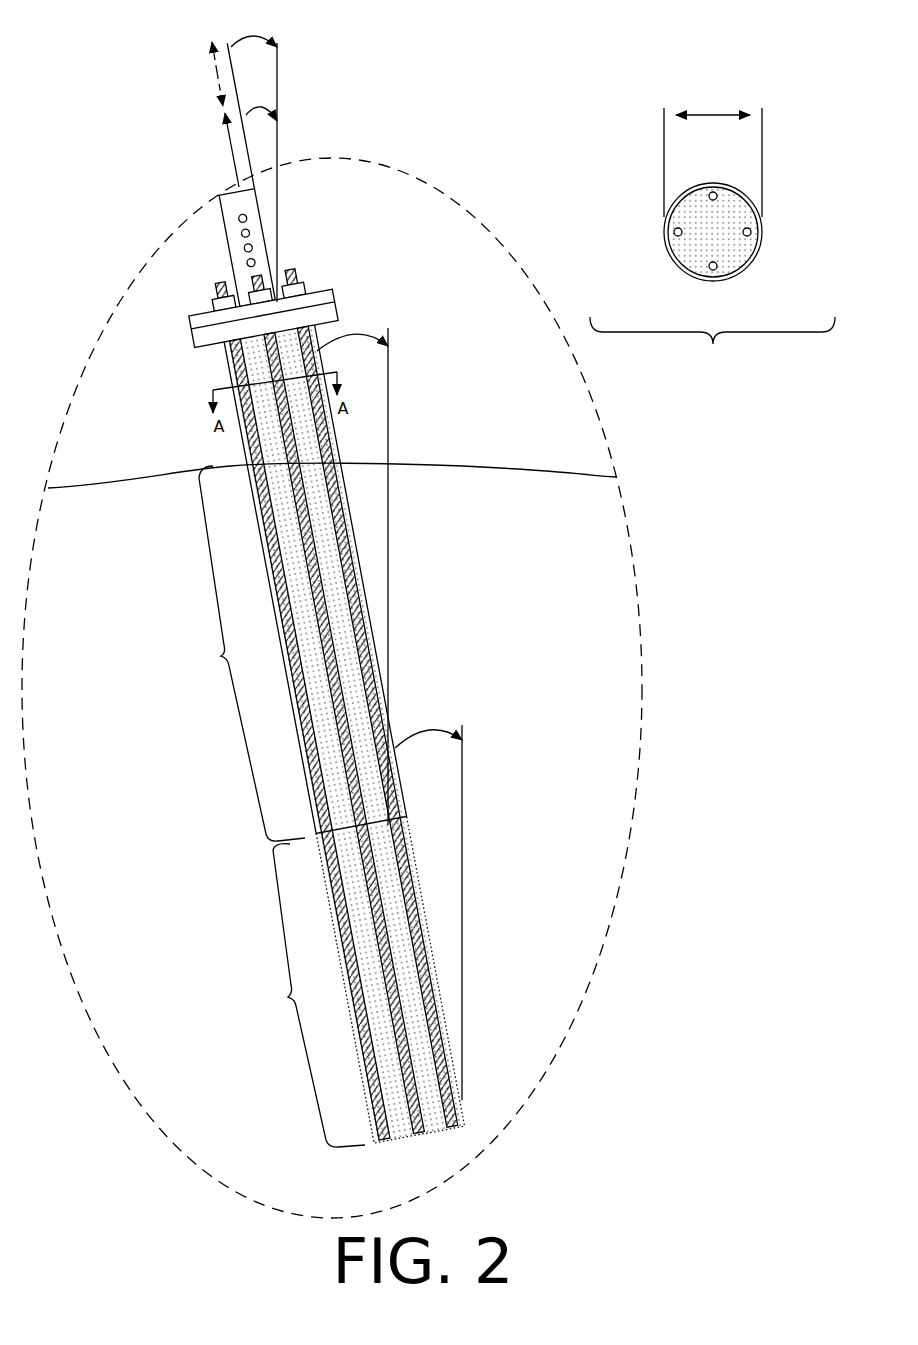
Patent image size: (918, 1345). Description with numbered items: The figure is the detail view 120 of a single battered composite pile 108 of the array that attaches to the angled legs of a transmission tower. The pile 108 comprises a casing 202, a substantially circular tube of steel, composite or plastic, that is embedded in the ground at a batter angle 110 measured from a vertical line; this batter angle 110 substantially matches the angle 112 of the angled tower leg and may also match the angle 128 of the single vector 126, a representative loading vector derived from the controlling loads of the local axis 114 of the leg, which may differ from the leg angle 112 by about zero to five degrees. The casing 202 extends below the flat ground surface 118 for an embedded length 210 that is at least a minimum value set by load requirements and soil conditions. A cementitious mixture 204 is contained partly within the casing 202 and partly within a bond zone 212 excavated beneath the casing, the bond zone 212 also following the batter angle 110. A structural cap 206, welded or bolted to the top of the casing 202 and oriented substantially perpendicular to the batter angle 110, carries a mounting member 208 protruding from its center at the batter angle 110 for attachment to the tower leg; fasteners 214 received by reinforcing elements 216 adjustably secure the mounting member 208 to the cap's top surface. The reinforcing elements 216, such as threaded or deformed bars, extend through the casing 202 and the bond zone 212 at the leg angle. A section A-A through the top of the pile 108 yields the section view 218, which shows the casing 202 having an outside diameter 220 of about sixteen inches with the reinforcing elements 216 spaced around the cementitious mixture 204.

The battered composite pile 108 is at (394, 267).
The batter angle 110 is at (355, 332).
The angle of angled tower leg 112 is at (265, 38).
The local axis 114 is at (210, 67).
The flat ground surface 118 is at (140, 486).
The detail view 120 is at (353, 160).
The single vector 126 is at (222, 133).
The angle of single vector 128 is at (266, 104).
The casing 202 is at (227, 352).
The cementitious mixture 204 is at (254, 372).
The structural cap 206 is at (190, 342).
The mounting member 208 is at (225, 212).
The length of casing embedded in the ground 210 is at (222, 658).
The bond zone 212 is at (292, 1000).
The fasteners 214 is at (250, 286).
The reinforcing elements 216 is at (437, 1131).
The section view 218 is at (712, 344).
The outside diameter 220 is at (713, 161).